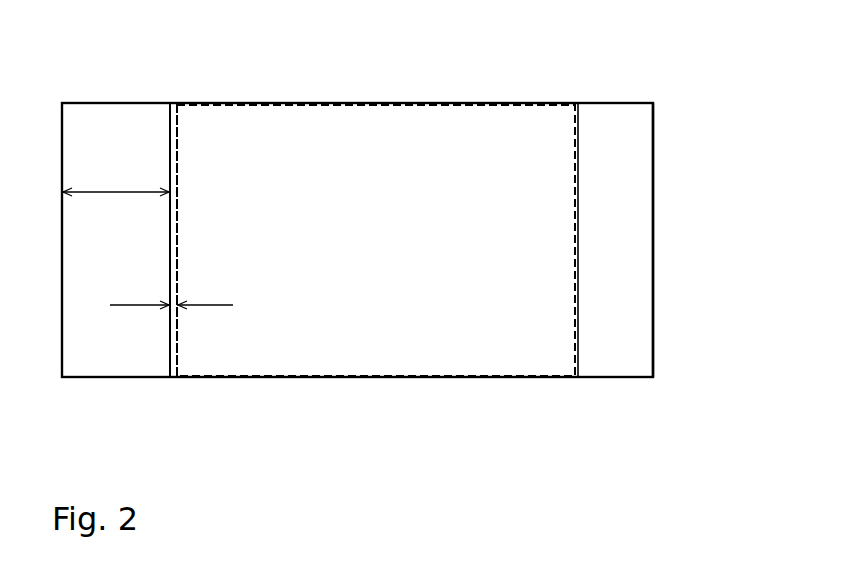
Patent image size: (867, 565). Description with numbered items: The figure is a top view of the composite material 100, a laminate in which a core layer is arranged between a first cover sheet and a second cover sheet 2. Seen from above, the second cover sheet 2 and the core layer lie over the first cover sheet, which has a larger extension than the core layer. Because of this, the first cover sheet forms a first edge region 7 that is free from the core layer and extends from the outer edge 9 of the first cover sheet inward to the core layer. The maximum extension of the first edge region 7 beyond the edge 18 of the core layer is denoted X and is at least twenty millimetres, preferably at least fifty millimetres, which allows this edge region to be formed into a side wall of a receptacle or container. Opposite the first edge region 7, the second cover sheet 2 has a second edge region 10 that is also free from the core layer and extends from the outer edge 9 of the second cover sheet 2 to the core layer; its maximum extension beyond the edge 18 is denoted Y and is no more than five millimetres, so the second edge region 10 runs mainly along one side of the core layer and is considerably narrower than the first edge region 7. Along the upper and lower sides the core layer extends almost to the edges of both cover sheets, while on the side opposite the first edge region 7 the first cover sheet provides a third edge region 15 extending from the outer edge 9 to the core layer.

The composite material 100 is at (621, 431).
The first edge region 7 is at (112, 130).
The second edge region 10 is at (172, 357).
The second cover sheet 2 is at (350, 138).
The edge of the core layer 18 is at (178, 240).
The third edge region 15 is at (617, 298).
The outer edge 9 is at (607, 103).
The maximum extension of the first edge region X is at (102, 190).
The maximum extension of the second edge region Y is at (202, 303).